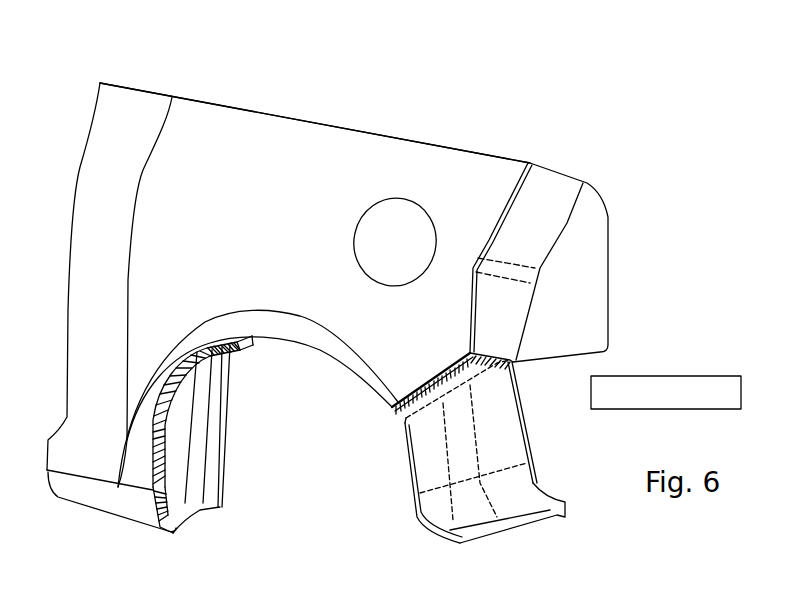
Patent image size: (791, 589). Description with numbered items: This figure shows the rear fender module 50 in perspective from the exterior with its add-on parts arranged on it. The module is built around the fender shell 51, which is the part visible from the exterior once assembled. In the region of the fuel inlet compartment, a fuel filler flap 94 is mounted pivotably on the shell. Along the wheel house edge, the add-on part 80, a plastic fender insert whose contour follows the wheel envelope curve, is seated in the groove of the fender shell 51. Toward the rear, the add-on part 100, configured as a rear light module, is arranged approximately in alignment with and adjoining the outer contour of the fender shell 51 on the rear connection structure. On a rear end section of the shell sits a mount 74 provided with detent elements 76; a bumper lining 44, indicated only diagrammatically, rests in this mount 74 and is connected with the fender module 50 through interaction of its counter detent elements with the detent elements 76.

The rear fender module 50 is at (433, 105).
The fender shell 51 is at (340, 138).
The fuel filler flap 94 is at (412, 215).
The add-on part (rear light module) 100 is at (562, 188).
The detent elements 76 is at (392, 407).
The mount 74 is at (434, 372).
The add-on part (fender insert) 80 is at (517, 455).
The bumper lining 44 is at (646, 386).